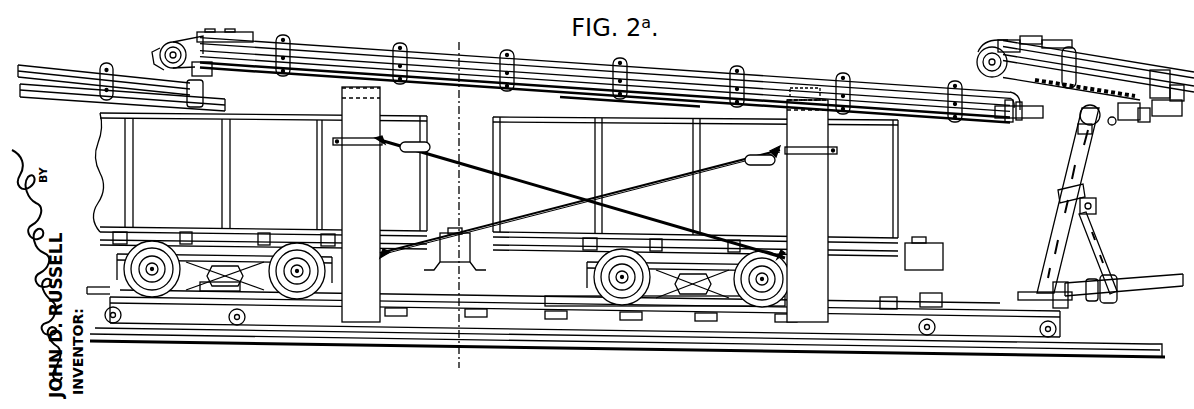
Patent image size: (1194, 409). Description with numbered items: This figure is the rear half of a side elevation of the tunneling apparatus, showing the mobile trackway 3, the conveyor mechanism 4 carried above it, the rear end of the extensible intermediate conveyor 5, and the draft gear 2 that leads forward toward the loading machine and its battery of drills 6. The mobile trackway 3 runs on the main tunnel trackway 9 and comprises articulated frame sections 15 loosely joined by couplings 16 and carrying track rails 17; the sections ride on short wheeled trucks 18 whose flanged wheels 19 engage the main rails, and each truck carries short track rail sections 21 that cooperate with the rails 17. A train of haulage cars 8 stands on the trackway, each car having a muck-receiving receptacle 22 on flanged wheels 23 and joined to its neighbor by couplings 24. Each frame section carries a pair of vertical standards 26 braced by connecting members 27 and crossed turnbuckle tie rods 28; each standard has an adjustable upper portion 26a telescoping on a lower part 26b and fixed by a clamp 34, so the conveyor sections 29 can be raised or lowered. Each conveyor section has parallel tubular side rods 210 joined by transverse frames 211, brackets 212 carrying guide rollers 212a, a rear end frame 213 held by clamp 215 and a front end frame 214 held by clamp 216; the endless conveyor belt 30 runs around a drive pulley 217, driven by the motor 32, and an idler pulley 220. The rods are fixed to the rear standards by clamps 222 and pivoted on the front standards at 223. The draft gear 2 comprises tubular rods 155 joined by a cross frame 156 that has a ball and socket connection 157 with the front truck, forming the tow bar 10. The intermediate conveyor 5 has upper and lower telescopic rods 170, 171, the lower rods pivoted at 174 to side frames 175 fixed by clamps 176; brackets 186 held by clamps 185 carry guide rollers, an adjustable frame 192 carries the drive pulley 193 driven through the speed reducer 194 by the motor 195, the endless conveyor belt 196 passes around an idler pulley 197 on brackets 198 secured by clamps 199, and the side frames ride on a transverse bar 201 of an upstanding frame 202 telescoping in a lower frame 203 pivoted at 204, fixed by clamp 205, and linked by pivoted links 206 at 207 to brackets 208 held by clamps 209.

The extensible draft gear 2 is at (1147, 291).
The mobile trackway 3 is at (432, 316).
The conveyor mechanism 4 is at (447, 46).
The extensible intermediate conveyor 5 is at (1136, 62).
The battery of drills 6 is at (1102, 45).
The train of haulage cars 8 is at (903, 165).
The main tunnel trackway 9 is at (640, 341).
The extensible tow bar 10 is at (22, 92).
The articulated frame sections 15 is at (588, 306).
The couplings 16 is at (210, 300).
The track rails 17 is at (527, 320).
The wheeled trucks 18 is at (147, 308).
The flanged wheels 19 is at (113, 324).
The track rail sections 21 is at (176, 300).
The muck-receiving receptacle 22 is at (104, 128).
The flanged wheels 23 is at (152, 248).
The couplings 24 is at (459, 42).
The vertical standards 26 is at (361, 324).
The adjustable upper portion 26a is at (375, 106).
The lower part 26b is at (362, 214).
The connecting members 27 is at (470, 142).
The crossed turnbuckle tie rods 28 is at (678, 172).
The conveyor sections 29 is at (77, 70).
The endless conveyor belt 30 is at (694, 46).
The driving motor 32 is at (230, 31).
The clamp 34 is at (361, 146).
The tubular rods 155 is at (1162, 275).
The cross frame 156 is at (1066, 305).
The ball and socket pivotal connection 157 is at (1020, 294).
The upper telescopic tubular rods 170 is at (1130, 109).
The lower telescopic tubular rods 171 is at (1114, 125).
The pivot 174 is at (1110, 160).
The side frames 175 is at (1080, 113).
The clamps 176 is at (1105, 78).
The clamps 185 is at (1160, 86).
The brackets 186 is at (1170, 73).
The adjustable frame 192 is at (1005, 40).
The drive pulley 193 is at (980, 58).
The speed reducer 194 is at (985, 45).
The motor 195 is at (1031, 36).
The endless conveyor belt 196 is at (1056, 42).
The idler pulley 197 is at (1150, 108).
The brackets 198 is at (1145, 124).
The clamps 199 is at (1160, 116).
The transverse bar 201 is at (1078, 129).
The upstanding frame 202 is at (1076, 163).
The lower frame 203 is at (1065, 210).
The pivot 204 is at (1045, 275).
The clamp 205 is at (1086, 192).
The pivoted links 206 is at (1096, 208).
The pivotal connection 207 is at (1114, 276).
The brackets 208 is at (1110, 303).
The clamps 209 is at (1095, 283).
The tubular side rods 210 is at (666, 94).
The transverse frames 211 is at (36, 100).
The brackets 212 is at (97, 92).
The guide rollers 212a is at (843, 73).
The rear end frame 213 is at (172, 41).
The front end frame 214 is at (1008, 120).
The clamp 215 is at (205, 76).
The clamp 216 is at (1019, 122).
The drive pulley 217 is at (160, 57).
The idler pulley 220 is at (995, 112).
The clamps 222 is at (360, 68).
The pivotal support 223 is at (802, 88).